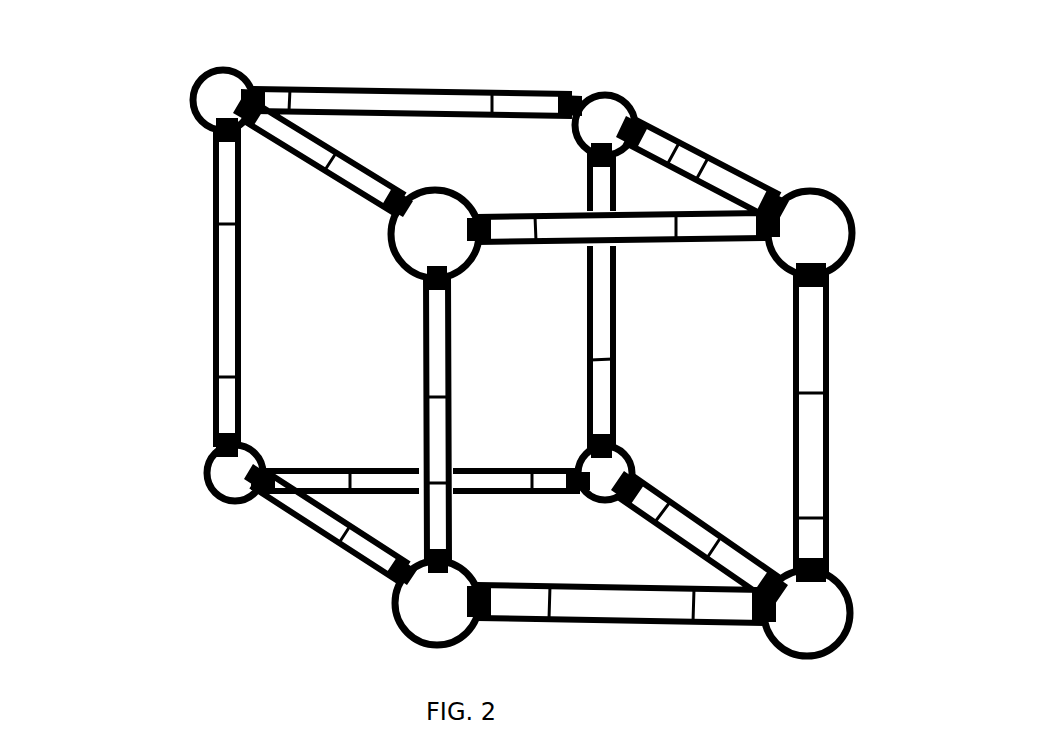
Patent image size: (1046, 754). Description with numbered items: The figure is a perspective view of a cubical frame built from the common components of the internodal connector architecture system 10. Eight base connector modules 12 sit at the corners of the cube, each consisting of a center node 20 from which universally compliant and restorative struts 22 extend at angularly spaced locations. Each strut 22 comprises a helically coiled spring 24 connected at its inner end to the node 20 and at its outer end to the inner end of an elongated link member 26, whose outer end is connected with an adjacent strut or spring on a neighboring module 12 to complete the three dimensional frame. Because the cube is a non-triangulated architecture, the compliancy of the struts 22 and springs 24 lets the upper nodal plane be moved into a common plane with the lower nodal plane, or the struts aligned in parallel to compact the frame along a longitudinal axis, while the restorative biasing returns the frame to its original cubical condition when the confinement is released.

The internodal connector architecture system 10 is at (137, 185).
The base connector module 12 is at (191, 81).
The center node 20 is at (617, 108).
The strut 22 is at (384, 86).
The helically coiled spring 24 is at (565, 97).
The elongated link member 26 is at (510, 90).